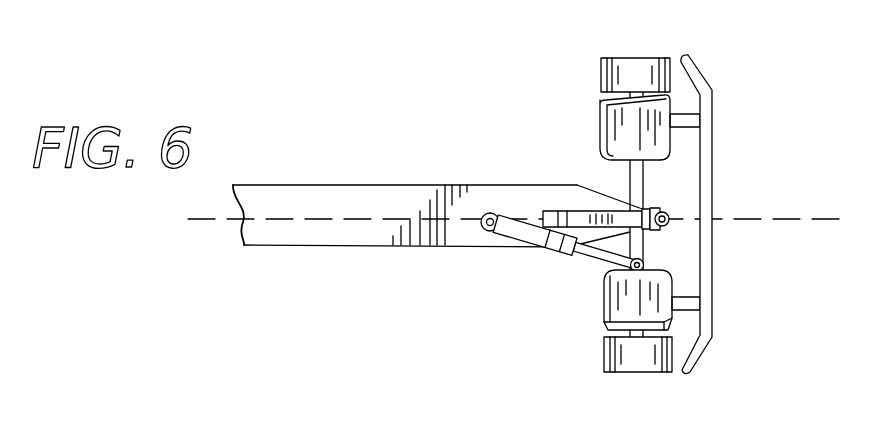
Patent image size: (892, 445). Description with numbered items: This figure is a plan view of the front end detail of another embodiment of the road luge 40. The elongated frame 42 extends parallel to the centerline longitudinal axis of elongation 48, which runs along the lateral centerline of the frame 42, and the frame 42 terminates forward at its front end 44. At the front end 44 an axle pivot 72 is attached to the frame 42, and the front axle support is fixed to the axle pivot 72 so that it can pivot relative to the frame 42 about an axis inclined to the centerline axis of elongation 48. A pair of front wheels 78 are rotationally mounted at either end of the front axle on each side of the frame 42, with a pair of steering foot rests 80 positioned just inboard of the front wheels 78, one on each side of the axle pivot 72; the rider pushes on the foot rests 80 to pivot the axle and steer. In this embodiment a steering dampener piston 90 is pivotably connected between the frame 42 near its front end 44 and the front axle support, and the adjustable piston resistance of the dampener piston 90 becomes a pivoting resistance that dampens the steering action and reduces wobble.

The road luge 40 is at (344, 136).
The frame 42 is at (316, 202).
The front end 44 is at (551, 187).
The centerline longitudinal axis of elongation 48 is at (794, 215).
The axle pivot 72 is at (653, 210).
The front wheels 78 is at (663, 58).
The steering foot rests 80 is at (603, 124).
The steering dampener piston 90 is at (534, 245).